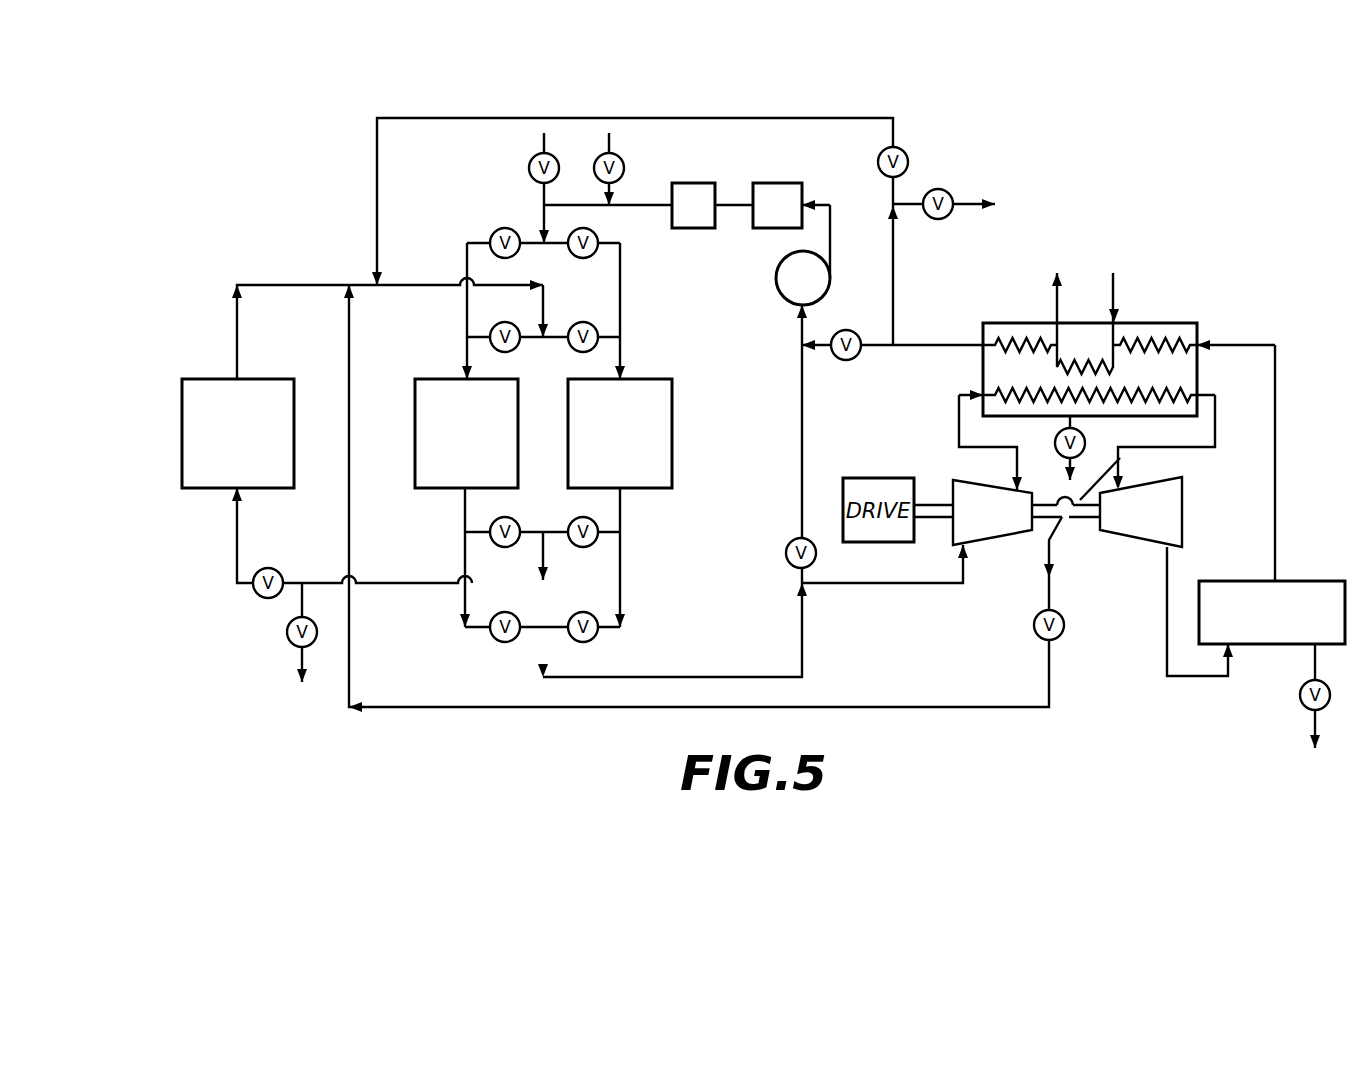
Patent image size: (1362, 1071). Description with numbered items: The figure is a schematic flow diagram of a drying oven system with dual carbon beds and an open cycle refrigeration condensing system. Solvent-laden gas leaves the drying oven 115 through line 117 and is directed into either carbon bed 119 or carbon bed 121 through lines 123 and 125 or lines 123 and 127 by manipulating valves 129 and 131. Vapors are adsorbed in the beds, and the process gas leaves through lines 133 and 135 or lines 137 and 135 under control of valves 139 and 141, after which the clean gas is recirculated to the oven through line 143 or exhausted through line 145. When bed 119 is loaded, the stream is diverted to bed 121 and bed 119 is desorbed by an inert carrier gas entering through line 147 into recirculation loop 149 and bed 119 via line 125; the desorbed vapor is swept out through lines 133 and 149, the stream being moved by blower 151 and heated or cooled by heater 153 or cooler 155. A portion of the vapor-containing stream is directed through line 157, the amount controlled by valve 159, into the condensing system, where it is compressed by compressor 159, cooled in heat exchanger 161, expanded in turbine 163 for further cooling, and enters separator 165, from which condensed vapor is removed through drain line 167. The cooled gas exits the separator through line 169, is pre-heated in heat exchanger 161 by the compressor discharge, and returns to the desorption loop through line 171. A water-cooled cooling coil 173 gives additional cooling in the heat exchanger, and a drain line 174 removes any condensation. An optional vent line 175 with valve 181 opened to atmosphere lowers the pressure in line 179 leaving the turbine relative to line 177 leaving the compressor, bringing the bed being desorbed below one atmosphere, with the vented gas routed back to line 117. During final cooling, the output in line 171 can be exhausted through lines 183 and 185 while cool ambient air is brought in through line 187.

The drying oven 115 is at (282, 379).
The line 117 is at (276, 285).
The carbon bed 119 is at (415, 468).
The carbon bed 121 is at (672, 460).
The line 123 is at (535, 344).
The line 125 is at (467, 350).
The line 127 is at (622, 347).
The valve 129 is at (512, 320).
The valve 131 is at (583, 322).
The line 133 is at (465, 510).
The line 135 is at (556, 527).
The line 137 is at (622, 515).
The valve 139 is at (515, 545).
The valve 141 is at (583, 548).
The line 143 is at (548, 598).
The line 145 is at (302, 602).
The line 147 is at (609, 143).
The recirculation loop 149 is at (665, 677).
The blower 151 is at (781, 290).
The heater 153 is at (779, 182).
The cooler 155 is at (697, 182).
The line 157 is at (878, 583).
The compressor 159 is at (955, 478).
The heat exchanger 161 is at (1176, 320).
The turbine 163 is at (1122, 540).
The separator 165 is at (1313, 580).
The drain line 167 is at (1315, 722).
The line 169 is at (1275, 422).
The line 171 is at (915, 345).
The cooling coil 173 is at (1078, 365).
The drain line 174 is at (1072, 425).
The vent line 175 is at (1062, 597).
The line 177 is at (1238, 447).
The line 179 is at (1190, 676).
The valve 181 is at (1060, 637).
The line 183 is at (893, 285).
The line 185 is at (970, 200).
The line 187 is at (543, 148).